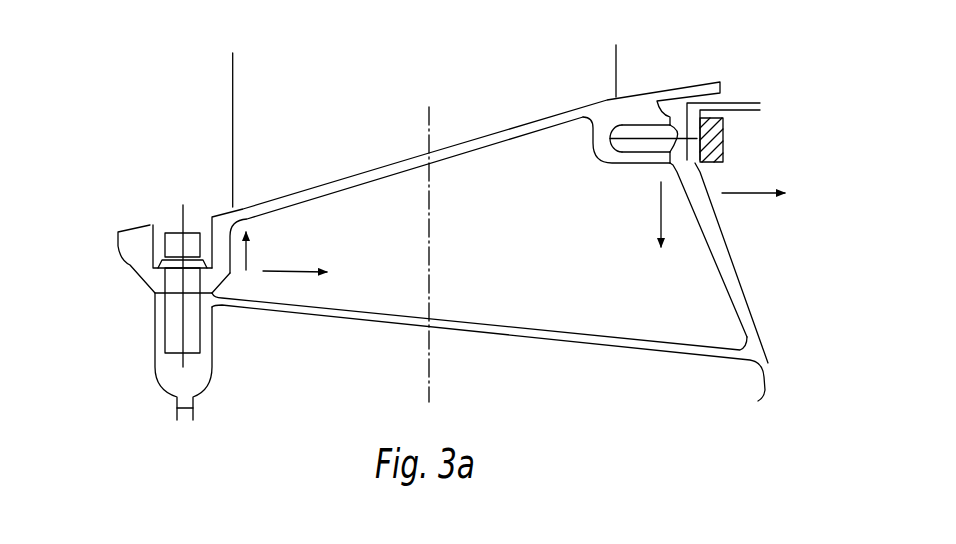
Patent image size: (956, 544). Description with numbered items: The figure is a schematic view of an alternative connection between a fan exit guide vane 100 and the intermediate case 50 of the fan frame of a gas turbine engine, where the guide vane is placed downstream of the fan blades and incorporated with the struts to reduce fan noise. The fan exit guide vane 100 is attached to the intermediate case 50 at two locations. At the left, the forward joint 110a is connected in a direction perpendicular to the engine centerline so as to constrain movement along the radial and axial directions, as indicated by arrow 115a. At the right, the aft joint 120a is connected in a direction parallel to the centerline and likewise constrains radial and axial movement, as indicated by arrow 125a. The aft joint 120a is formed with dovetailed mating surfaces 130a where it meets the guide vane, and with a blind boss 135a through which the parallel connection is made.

The fan exit guide vane 100 is at (344, 147).
The intermediate case 50 is at (501, 314).
The forward joint 110a is at (140, 307).
The arrow 115a is at (250, 262).
The aft joint 120a is at (732, 139).
The arrow 125a is at (658, 217).
The dovetailed mating surfaces 130a is at (615, 100).
The blind boss 135a is at (593, 145).